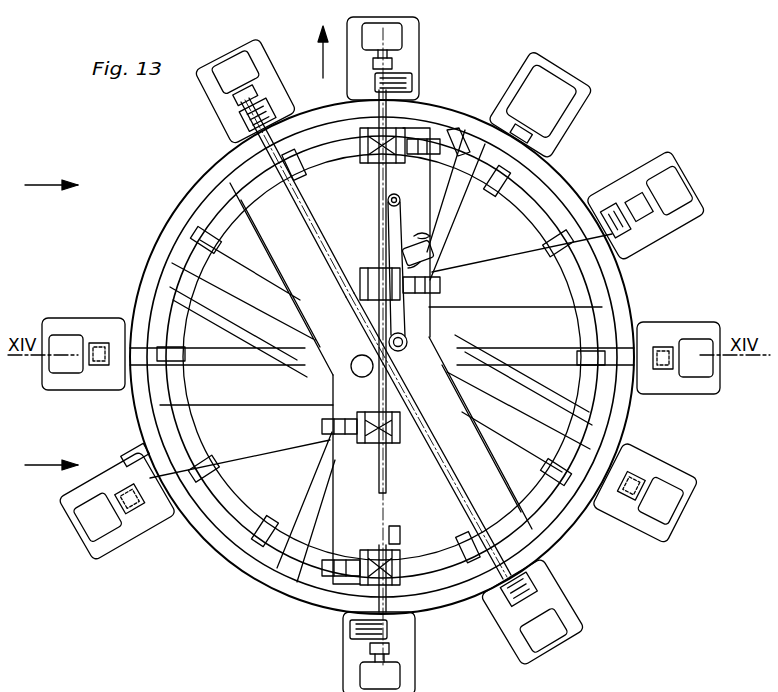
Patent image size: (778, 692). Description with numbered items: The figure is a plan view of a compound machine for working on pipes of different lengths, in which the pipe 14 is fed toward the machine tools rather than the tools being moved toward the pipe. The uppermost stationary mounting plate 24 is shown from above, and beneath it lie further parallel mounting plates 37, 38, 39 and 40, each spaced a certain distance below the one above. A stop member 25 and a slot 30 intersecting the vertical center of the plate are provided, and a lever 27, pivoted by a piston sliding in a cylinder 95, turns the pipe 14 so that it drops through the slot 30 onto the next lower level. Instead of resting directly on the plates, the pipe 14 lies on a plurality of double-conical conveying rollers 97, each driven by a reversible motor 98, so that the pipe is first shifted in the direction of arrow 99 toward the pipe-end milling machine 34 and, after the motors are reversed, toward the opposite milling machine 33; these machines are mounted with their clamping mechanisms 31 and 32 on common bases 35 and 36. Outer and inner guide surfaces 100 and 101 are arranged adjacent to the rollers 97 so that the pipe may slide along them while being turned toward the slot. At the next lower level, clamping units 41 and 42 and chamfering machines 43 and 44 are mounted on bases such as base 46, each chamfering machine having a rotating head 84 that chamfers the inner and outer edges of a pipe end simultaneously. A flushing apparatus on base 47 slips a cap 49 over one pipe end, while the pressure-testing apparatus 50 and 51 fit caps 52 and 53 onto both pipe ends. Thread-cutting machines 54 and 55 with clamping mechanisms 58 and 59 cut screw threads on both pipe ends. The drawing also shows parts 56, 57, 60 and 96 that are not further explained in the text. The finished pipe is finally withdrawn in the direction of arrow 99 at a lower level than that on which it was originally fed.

The pipe 14 is at (378, 482).
The mounting plate 24 is at (348, 527).
The stop member 25 is at (397, 538).
The lever 27 is at (395, 228).
The slot 30 is at (456, 492).
The clamping mechanism 31 is at (355, 626).
The clamping mechanism 32 is at (412, 86).
The pipe-end milling machine 33 is at (402, 681).
The pipe-end milling machine 34 is at (402, 40).
The base 35 is at (415, 652).
The base 36 is at (414, 53).
The mounting plate 37 is at (547, 412).
The mounting plate 38 is at (540, 320).
The mounting plate 39 is at (507, 228).
The slotted mounting plate 40 is at (457, 140).
The clamping unit 41 is at (495, 614).
The clamping unit 42 is at (272, 106).
The chamfering machine 43 is at (534, 652).
The chamfering machine 44 is at (226, 70).
The base 46 is at (252, 76).
The base 47 is at (664, 503).
The cap 49 is at (632, 500).
The pressure-testing apparatus 50 is at (692, 346).
The pressure-testing apparatus 51 is at (70, 322).
The cap 52 is at (660, 341).
The cap 53 is at (103, 327).
The thread-cutting machine 54 is at (664, 170).
The thread-cutting machine 55 is at (108, 532).
The coupling 56 is at (633, 205).
The coupling 57 is at (140, 520).
The clamping mechanism 58 is at (626, 262).
The clamping mechanism 59 is at (137, 456).
The drive housing 60 is at (534, 68).
The head 84 is at (242, 105).
The cylinder 95 is at (428, 243).
The upper tie rod 96 is at (363, 207).
The conveying roller 97 is at (378, 163).
The motor 98 is at (425, 153).
The arrow 99 is at (314, 52).
The outer guide surface 100 is at (328, 150).
The inner guide surface 101 is at (362, 276).